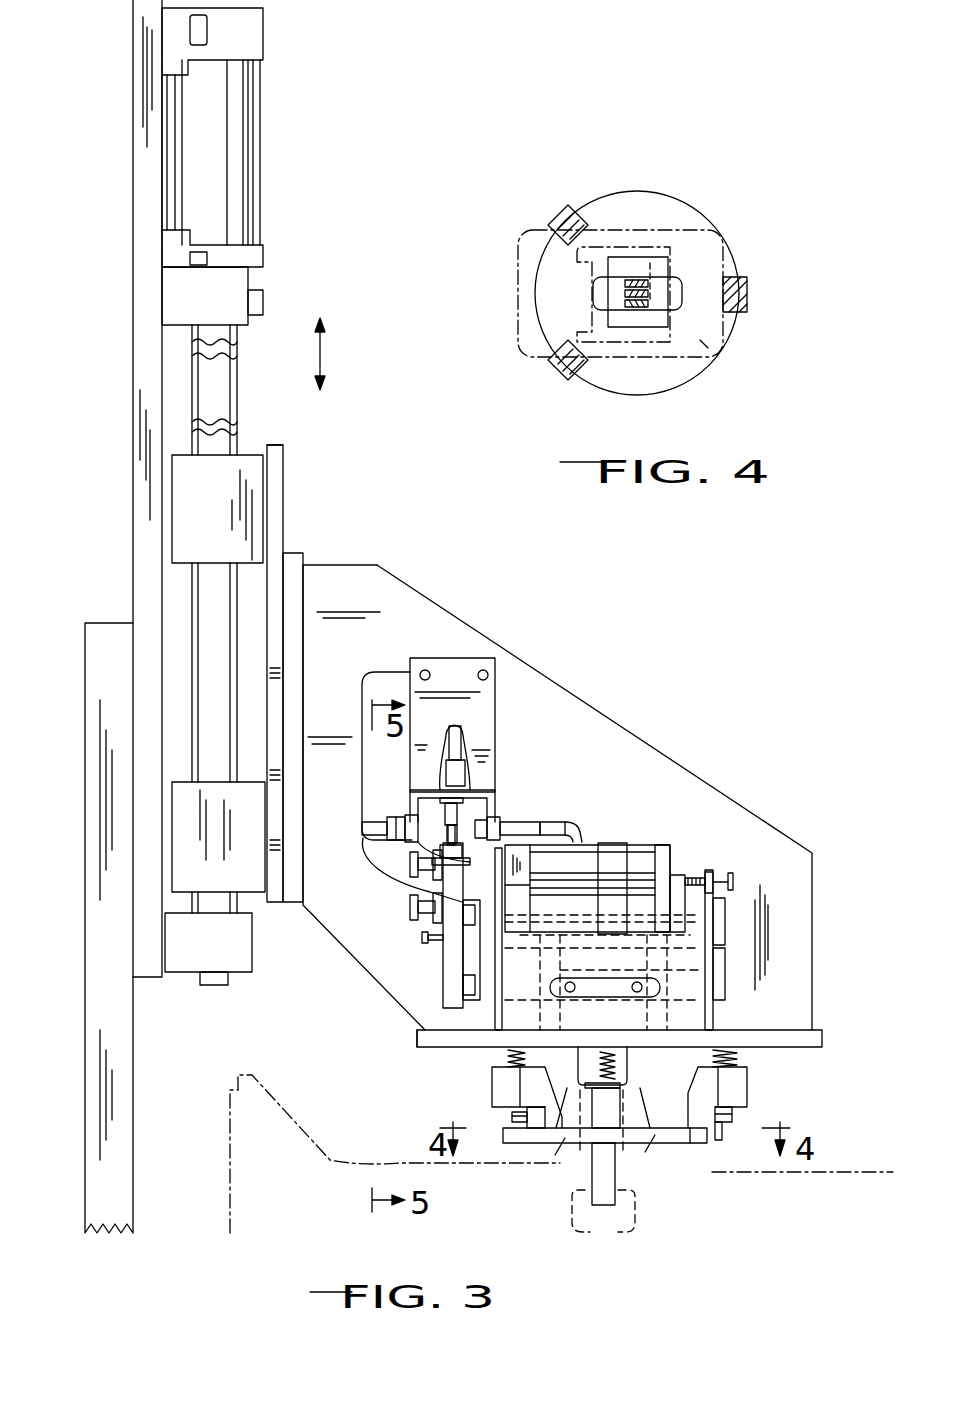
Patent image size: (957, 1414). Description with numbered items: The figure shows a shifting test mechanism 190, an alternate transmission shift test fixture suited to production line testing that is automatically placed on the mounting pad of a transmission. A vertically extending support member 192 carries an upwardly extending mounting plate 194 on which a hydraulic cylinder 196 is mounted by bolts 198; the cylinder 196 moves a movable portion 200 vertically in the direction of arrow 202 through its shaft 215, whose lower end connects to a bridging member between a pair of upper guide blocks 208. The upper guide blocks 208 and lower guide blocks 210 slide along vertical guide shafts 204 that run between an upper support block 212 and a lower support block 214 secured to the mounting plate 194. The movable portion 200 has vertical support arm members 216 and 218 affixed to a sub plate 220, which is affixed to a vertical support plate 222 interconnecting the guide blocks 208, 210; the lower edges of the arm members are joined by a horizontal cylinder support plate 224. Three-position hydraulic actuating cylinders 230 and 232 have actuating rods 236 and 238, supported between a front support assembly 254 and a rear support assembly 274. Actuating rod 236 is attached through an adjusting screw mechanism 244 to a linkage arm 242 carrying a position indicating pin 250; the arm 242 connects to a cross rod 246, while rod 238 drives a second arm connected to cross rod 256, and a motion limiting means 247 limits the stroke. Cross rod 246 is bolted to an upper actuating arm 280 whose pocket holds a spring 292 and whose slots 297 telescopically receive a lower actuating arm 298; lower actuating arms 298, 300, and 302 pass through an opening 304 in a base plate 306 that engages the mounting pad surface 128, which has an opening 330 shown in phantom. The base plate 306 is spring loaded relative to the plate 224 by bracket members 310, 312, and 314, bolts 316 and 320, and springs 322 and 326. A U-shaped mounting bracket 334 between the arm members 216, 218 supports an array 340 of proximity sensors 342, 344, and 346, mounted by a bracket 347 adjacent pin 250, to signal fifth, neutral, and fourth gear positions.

In FIG. 4, the transmission shift tower mounting pad surface 128 is at (518, 358).
In FIG. 3, the shifting test mechanism 190 is at (604, 881).
In FIG. 3, the support member 192 is at (108, 930).
In FIG. 3, the mounting plate 194 is at (133, 392).
In FIG. 3, the hydraulic cylinder 196 is at (220, 130).
In FIG. 3, the bolts 198 is at (210, 28).
In FIG. 3, the movable portion 200 is at (640, 740).
In FIG. 3, the arrow 202 is at (326, 345).
In FIG. 3, the guide shafts 204 is at (237, 428).
In FIG. 3, the upper guide blocks 208 is at (267, 447).
In FIG. 3, the lower guide blocks 210 is at (256, 900).
In FIG. 3, the upper support block 212 is at (227, 296).
In FIG. 3, the lower support block 214 is at (255, 975).
In FIG. 3, the shaft 215 is at (238, 382).
In FIG. 3, the vertical support arm member 216 is at (343, 582).
In FIG. 3, the vertical support arm member 218 is at (428, 617).
In FIG. 3, the sub plate 220 is at (297, 553).
In FIG. 3, the vertical support plate 222 is at (290, 473).
In FIG. 3, the cylinder support plate 224 is at (822, 1040).
In FIG. 3, the actuating cylinder 230 is at (582, 913).
In FIG. 3, the actuating cylinder 232 is at (583, 865).
In FIG. 3, the actuating rod 236 is at (406, 896).
In FIG. 3, the actuating rod 238 is at (390, 862).
In FIG. 3, the linkage arm 242 is at (463, 990).
In FIG. 3, the adjusting screw mechanism 244 is at (440, 965).
In FIG. 3, the cross rod 246 is at (443, 1010).
In FIG. 3, the motion limiting means 247 is at (440, 1000).
In FIG. 3, the position indicating pin 250 is at (420, 870).
In FIG. 3, the front support assembly 254 is at (445, 1038).
In FIG. 3, the cross rod 256 is at (725, 935).
In FIG. 3, the rear support assembly 274 is at (715, 1010).
In FIG. 3, the upper actuating arm 280 is at (600, 992).
In FIG. 3, the spring 292 is at (612, 1062).
In FIG. 3, the slots 297 is at (610, 1166).
In FIG. 3, the lower actuating arm 298 is at (596, 1178).
In FIG. 4, the lower actuating arm 298 is at (640, 310).
In FIG. 4, the lower actuating arm 300 is at (625, 293).
In FIG. 4, the lower actuating arm 302 is at (625, 283).
In FIG. 4, the opening 304 is at (684, 290).
In FIG. 3, the base plate 306 is at (697, 1146).
In FIG. 4, the base plate 306 is at (673, 222).
In FIG. 3, the bracket member 310 is at (732, 1093).
In FIG. 4, the bracket member 310 is at (750, 292).
In FIG. 4, the bracket member 312 is at (560, 208).
In FIG. 3, the bracket member 314 is at (497, 1088).
In FIG. 4, the bracket member 314 is at (562, 372).
In FIG. 3, the bolt 316 is at (735, 1127).
In FIG. 3, the bolt 320 is at (510, 1125).
In FIG. 3, the spring 322 is at (745, 1060).
In FIG. 3, the spring 326 is at (492, 1083).
In FIG. 4, the opening 330 is at (712, 352).
In FIG. 3, the U-shaped mounting bracket 334 is at (478, 712).
In FIG. 3, the array of proximity sensors 340 is at (404, 797).
In FIG. 3, the proximity sensor 342 is at (430, 822).
In FIG. 3, the proximity sensor 344 is at (470, 810).
In FIG. 3, the proximity sensor 346 is at (505, 835).
In FIG. 3, the bracket 347 is at (500, 820).